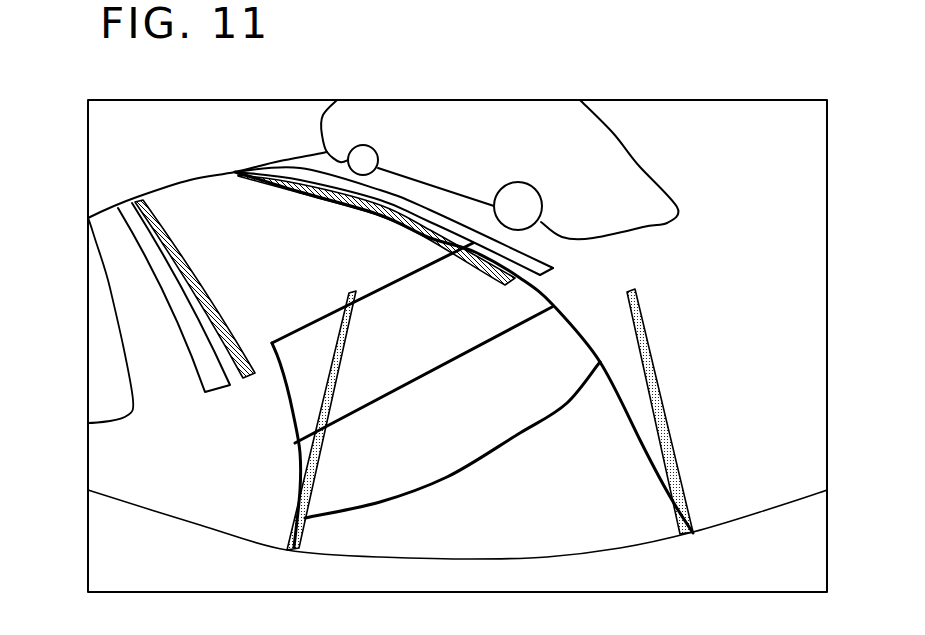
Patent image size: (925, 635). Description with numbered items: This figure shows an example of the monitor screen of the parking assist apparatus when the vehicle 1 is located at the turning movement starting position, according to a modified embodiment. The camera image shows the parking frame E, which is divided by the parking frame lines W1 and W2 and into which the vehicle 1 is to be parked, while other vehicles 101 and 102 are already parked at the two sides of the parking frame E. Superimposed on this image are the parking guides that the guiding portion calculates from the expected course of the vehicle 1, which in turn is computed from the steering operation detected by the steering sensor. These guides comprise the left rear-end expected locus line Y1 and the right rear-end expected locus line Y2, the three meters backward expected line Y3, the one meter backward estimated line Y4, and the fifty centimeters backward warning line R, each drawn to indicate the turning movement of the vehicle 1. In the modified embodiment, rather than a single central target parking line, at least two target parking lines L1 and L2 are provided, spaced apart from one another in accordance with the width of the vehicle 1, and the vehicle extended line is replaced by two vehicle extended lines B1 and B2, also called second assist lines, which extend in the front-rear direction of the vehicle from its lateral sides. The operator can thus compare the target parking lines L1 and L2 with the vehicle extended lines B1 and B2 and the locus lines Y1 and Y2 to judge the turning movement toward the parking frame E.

The vehicle 1 is at (603, 574).
The parking frame E is at (198, 198).
The other vehicle 101 is at (643, 166).
The other vehicle 102 is at (98, 357).
The parking frame line W1 is at (445, 218).
The target parking line L1 is at (298, 188).
The parking frame line W2 is at (198, 347).
The target parking line L2 is at (210, 290).
The left rear-end expected locus line Y1 is at (568, 312).
The right rear-end expected locus line Y2 is at (290, 408).
The 3 meters backward expected line Y3 is at (372, 290).
The 1 meter backward estimated line Y4 is at (447, 360).
The 50 centimeters backward warning line R is at (537, 423).
The vehicle extended line B1 is at (660, 382).
The vehicle extended line B2 is at (318, 455).